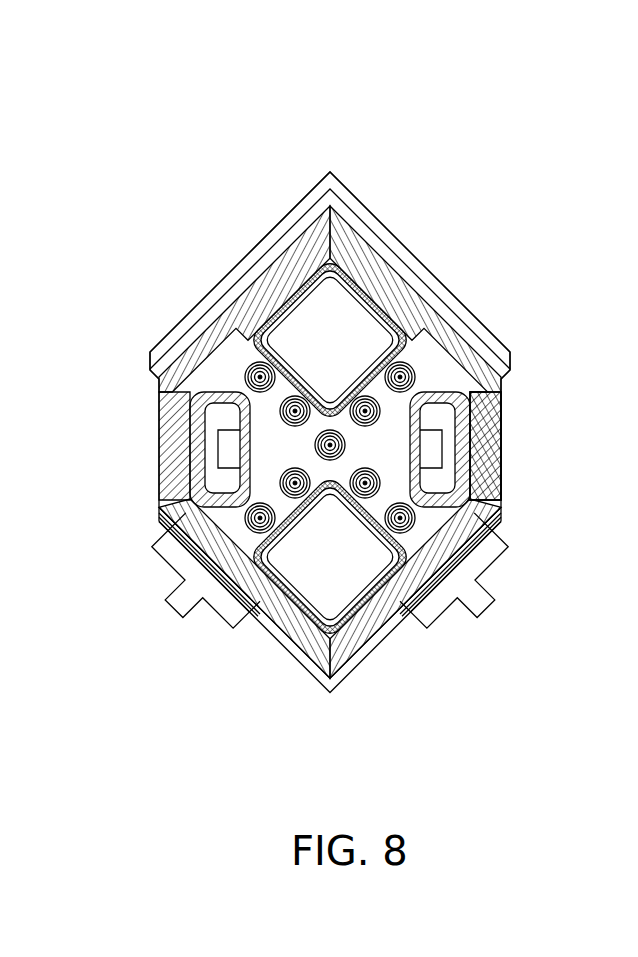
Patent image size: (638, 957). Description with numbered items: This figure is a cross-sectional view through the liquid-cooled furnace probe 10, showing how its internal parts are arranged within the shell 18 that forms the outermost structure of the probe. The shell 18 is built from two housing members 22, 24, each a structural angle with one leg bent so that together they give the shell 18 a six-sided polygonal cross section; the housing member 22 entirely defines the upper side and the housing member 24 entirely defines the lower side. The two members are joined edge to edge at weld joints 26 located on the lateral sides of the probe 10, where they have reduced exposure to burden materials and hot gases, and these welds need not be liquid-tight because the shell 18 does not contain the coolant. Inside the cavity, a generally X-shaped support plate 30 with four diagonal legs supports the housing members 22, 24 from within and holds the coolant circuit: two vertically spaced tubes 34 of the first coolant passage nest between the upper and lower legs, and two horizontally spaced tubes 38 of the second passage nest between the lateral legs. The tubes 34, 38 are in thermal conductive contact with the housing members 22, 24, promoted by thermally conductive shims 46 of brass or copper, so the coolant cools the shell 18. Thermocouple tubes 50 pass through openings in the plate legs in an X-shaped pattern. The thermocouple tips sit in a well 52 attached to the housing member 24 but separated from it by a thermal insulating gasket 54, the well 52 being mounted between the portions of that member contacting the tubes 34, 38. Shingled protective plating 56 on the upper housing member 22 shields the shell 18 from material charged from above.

The probe 10 is at (137, 153).
The shell 18 is at (508, 417).
The housing member 22 is at (250, 292).
The housing member 24 is at (350, 663).
The weld joints 26 is at (190, 493).
The support plates 30 is at (232, 372).
The tubes 34 is at (340, 258).
The tubes 38 is at (198, 447).
The thermally conductive shims 46 is at (322, 258).
The tubes 50 is at (200, 548).
The well 52 is at (181, 603).
The thermal insulating gasket 54 is at (177, 533).
The protective plating 56 is at (270, 232).